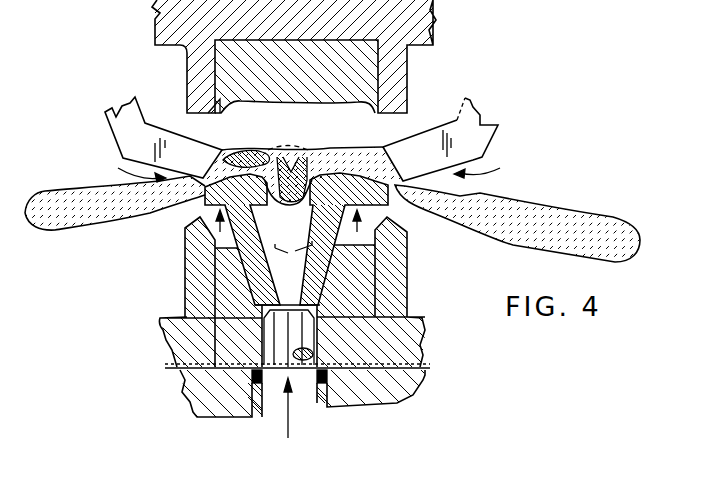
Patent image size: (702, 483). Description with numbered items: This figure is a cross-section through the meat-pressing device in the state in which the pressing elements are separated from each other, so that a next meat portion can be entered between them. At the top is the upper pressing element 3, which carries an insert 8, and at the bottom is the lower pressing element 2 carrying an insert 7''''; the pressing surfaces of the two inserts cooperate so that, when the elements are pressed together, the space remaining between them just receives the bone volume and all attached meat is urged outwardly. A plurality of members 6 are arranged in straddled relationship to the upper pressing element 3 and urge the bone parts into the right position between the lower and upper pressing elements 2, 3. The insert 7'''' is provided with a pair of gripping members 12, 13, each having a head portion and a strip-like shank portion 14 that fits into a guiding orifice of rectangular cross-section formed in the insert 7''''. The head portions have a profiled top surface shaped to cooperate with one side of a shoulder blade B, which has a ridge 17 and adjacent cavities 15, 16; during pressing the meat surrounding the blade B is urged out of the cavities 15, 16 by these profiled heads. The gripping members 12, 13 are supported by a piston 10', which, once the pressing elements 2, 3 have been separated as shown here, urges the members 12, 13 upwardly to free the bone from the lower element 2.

The lower pressing element 2 is at (180, 342).
The upper pressing element 3 is at (157, 28).
The members 6 is at (125, 117).
The insert 7'''' is at (295, 263).
The insert 8 is at (259, 97).
The piston 10' is at (304, 371).
The gripping member 12 is at (388, 200).
The gripping member 13 is at (210, 202).
The shank portion 14 is at (213, 249).
The cavity 15 is at (271, 160).
The cavity 16 is at (320, 165).
The ridge 17 is at (291, 203).
The shoulder blade B is at (292, 168).